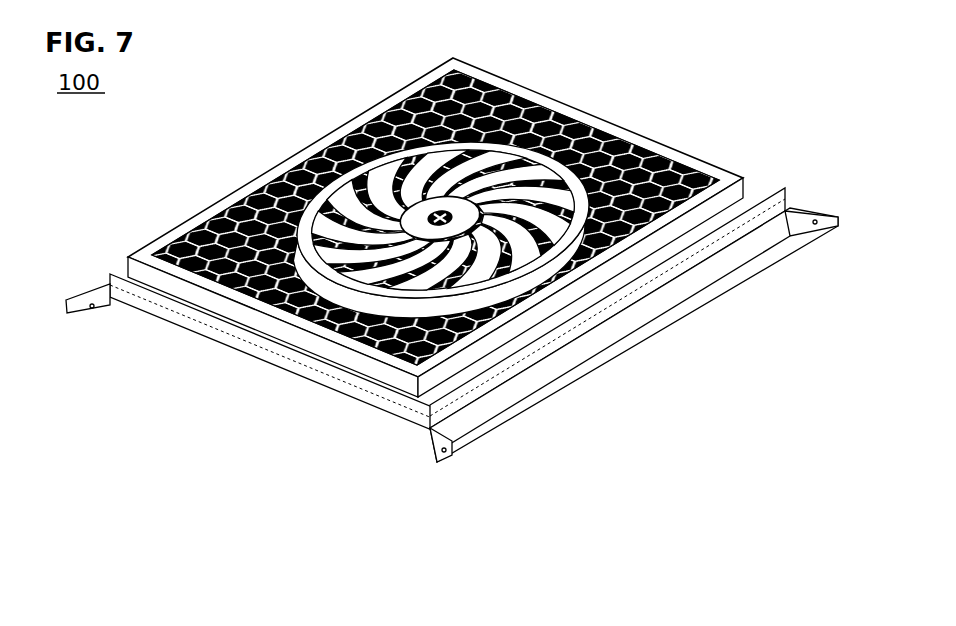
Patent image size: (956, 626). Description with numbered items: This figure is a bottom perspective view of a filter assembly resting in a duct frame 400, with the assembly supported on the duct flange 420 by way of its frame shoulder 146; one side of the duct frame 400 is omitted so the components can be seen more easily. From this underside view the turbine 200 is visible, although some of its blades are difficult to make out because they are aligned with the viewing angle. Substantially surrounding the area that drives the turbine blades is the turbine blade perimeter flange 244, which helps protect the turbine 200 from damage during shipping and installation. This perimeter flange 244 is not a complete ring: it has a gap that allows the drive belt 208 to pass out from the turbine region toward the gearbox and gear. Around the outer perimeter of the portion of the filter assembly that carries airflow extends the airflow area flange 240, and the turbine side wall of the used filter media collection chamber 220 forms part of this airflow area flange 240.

The turbine 200 is at (390, 180).
The drive belt 208 is at (552, 265).
The used filter media collection chamber 220 is at (207, 216).
The airflow area flange 240 is at (175, 260).
The turbine blade perimeter flange 244 is at (503, 287).
The frame shoulder 146 is at (124, 284).
The duct frame 400 is at (730, 252).
The duct flange 420 is at (433, 403).